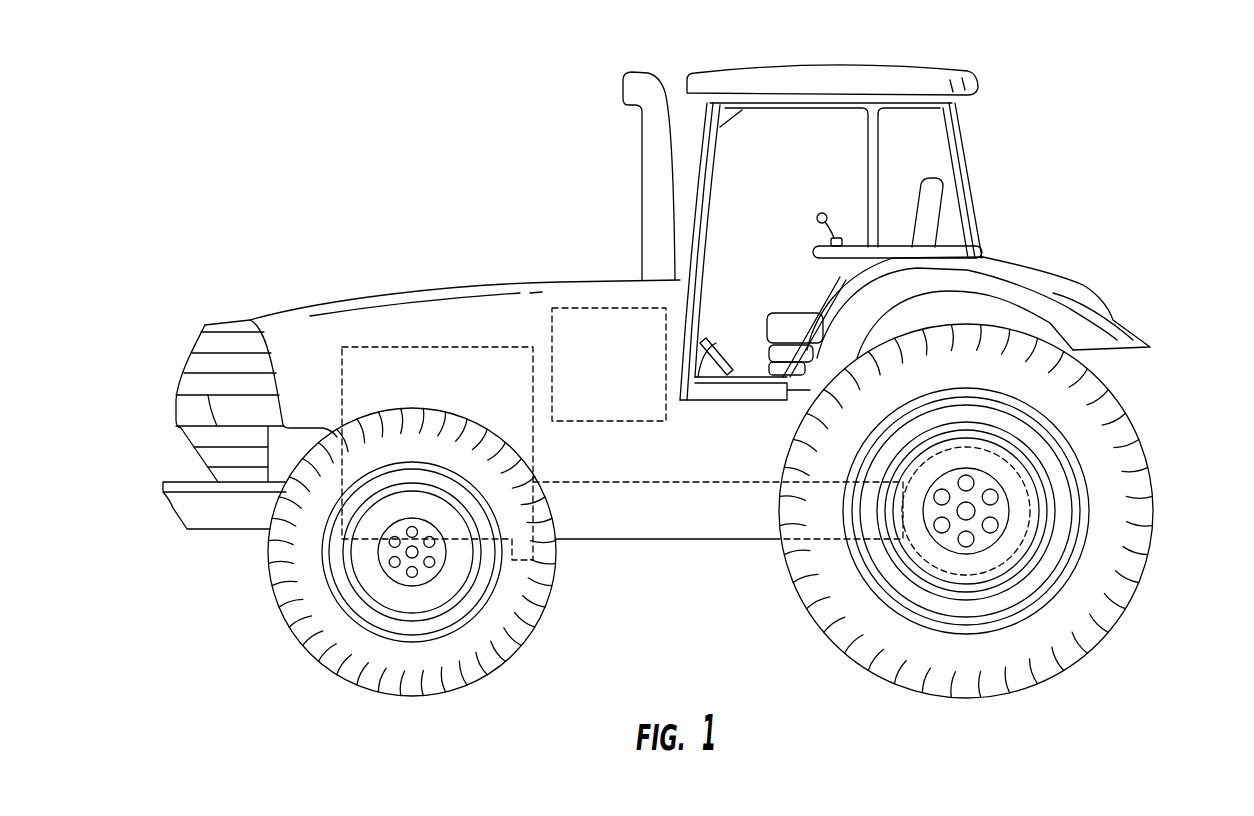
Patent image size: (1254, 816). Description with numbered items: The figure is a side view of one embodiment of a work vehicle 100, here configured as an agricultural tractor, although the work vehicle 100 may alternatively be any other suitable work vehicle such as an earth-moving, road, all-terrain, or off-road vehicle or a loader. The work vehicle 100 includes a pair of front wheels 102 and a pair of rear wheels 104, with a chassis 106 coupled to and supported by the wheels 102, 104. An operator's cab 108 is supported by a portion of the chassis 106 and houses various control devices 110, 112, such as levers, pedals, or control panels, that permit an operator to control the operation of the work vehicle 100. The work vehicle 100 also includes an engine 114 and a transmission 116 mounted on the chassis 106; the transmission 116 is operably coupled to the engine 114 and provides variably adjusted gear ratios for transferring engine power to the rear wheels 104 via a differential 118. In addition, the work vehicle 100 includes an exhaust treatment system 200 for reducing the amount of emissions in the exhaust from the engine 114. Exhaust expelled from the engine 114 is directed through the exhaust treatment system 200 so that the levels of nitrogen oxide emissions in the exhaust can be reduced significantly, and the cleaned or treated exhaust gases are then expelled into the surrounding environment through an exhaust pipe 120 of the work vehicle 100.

The work vehicle 100 is at (338, 112).
The front wheels 102 is at (278, 604).
The rear wheels 104 is at (1153, 520).
The chassis 106 is at (610, 540).
The operator's cab 108 is at (976, 166).
The control device 110 is at (820, 213).
The control device 112 is at (716, 352).
The engine 114 is at (432, 346).
The transmission 116 is at (603, 482).
The differential 118 is at (1033, 472).
The exhaust pipe 120 is at (650, 183).
The exhaust treatment system 200 is at (584, 304).